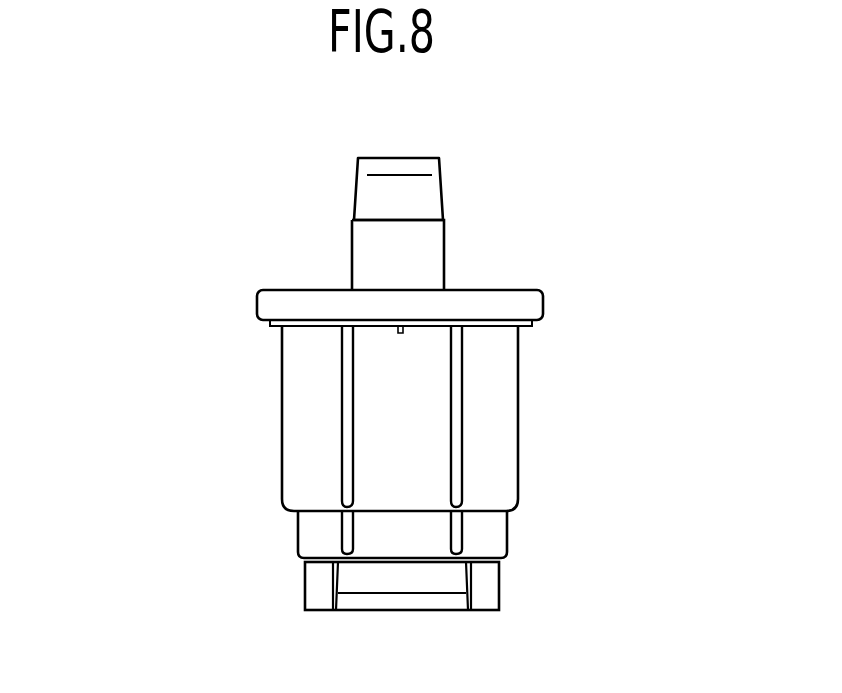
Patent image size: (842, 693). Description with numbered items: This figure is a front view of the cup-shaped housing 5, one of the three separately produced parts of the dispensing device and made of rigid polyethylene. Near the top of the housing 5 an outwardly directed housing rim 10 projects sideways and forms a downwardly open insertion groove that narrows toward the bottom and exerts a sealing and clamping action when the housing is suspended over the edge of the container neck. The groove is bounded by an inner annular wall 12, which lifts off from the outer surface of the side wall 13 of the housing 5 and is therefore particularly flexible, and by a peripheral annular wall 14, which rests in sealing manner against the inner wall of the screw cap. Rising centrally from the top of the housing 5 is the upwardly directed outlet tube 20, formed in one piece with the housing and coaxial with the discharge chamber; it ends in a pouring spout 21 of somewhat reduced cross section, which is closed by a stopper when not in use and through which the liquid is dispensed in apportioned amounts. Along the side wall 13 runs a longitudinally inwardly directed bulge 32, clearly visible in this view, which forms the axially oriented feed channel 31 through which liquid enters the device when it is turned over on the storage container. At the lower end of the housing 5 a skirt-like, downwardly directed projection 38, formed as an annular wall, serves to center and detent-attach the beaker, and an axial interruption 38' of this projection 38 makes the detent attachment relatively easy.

The cup-shaped housing 5 is at (521, 483).
The housing rim 10 is at (392, 274).
The inner annular wall 12 is at (532, 322).
The side wall 13 is at (281, 385).
The peripheral annular wall 14 is at (543, 306).
The outlet tube 20 is at (444, 240).
The pouring spout 21 is at (443, 165).
The feed channel 31 is at (423, 457).
The inwardly directed bulge 32 is at (455, 392).
The skirt-like projection 38 is at (391, 579).
The axial interruption 38' is at (275, 552).